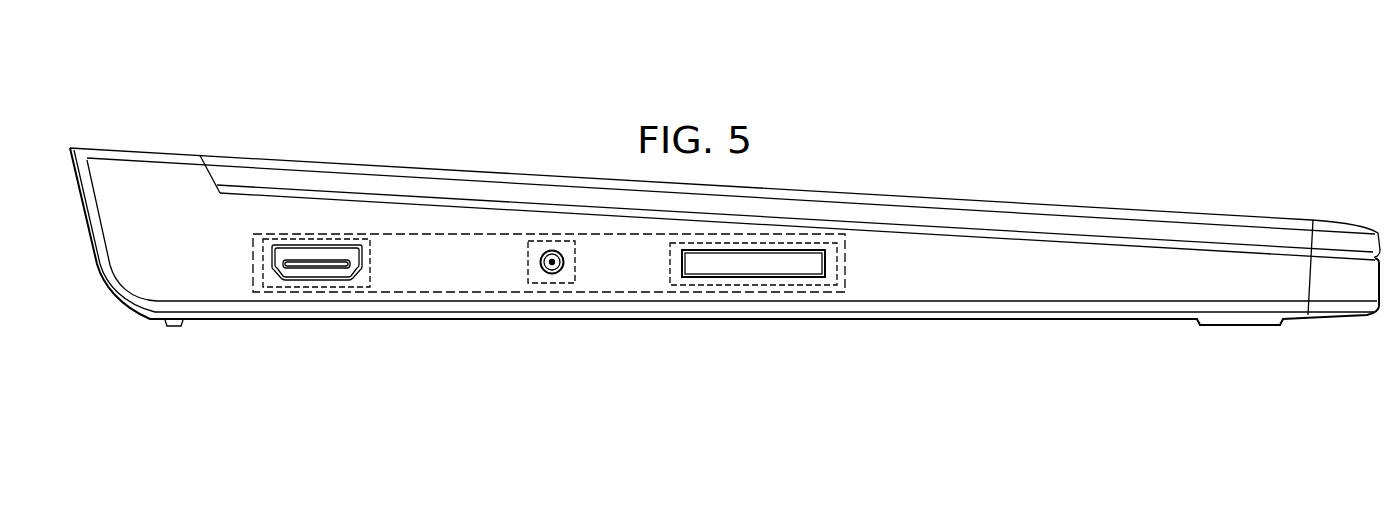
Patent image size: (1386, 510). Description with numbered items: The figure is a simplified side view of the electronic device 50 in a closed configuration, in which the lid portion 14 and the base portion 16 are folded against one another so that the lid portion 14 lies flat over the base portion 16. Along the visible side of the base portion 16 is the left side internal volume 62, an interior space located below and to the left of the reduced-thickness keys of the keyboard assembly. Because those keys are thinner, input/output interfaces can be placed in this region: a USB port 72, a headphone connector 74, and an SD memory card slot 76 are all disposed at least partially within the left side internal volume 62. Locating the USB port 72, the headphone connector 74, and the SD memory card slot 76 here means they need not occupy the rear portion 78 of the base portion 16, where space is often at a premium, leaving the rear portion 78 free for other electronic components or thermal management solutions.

The electronic device 50 is at (889, 87).
The lid portion 14 is at (983, 201).
The base portion 16 is at (979, 321).
The left side internal volume 62 is at (858, 264).
The USB port 72 is at (302, 281).
The headphone connector 74 is at (552, 274).
The SD memory card slot 76 is at (738, 277).
The rear portion 78 is at (178, 250).